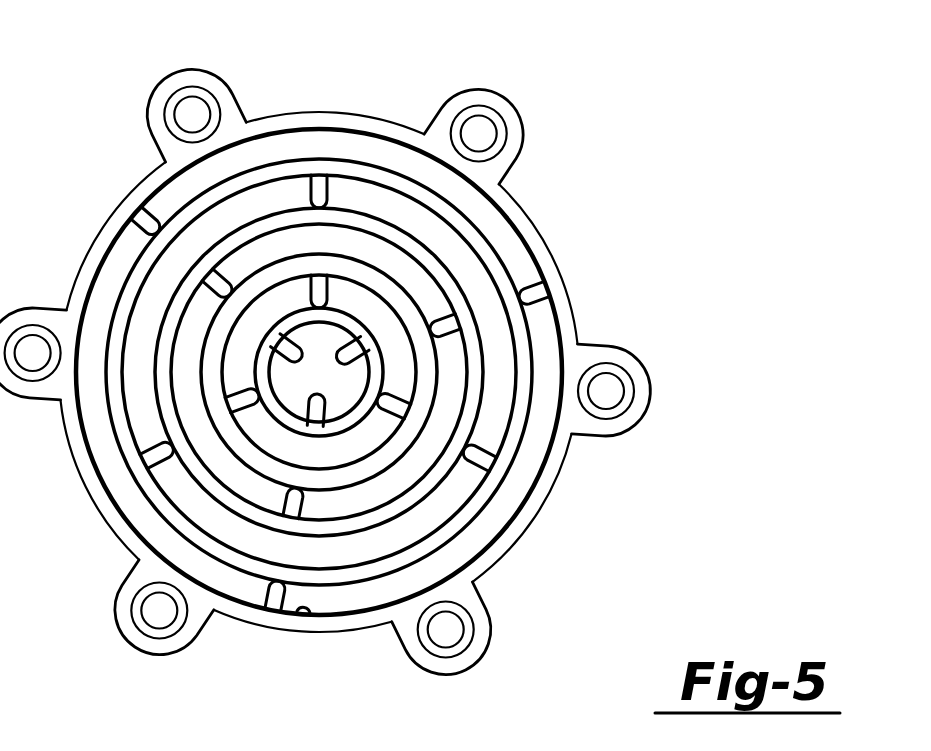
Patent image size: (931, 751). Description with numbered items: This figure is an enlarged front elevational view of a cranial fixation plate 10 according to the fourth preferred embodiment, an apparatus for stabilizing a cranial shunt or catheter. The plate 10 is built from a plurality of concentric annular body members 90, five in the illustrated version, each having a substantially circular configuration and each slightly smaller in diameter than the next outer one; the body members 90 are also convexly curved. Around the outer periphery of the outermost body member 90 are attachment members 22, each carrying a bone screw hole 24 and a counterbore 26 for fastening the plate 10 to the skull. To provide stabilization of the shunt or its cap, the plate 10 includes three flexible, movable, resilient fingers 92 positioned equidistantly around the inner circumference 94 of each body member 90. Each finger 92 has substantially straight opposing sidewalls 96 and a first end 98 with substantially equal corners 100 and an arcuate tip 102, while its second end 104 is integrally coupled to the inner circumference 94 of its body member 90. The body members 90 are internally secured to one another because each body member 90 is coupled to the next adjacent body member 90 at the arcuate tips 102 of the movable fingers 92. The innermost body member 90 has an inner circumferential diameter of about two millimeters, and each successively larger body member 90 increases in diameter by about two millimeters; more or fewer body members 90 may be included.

The cranial fixation plate 10 is at (606, 121).
The attachment member 22 is at (604, 434).
The bone screw hole 24 is at (608, 390).
The counterbore 26 is at (624, 396).
The annular body member 90 is at (365, 218).
The flexible movable resilient finger 92 is at (463, 338).
The inner circumference 94 is at (305, 614).
The opposing sidewall 96 is at (293, 407).
The first end 98 is at (318, 392).
The corner 100 is at (272, 592).
The arcuate tip 102 is at (290, 332).
The second end 104 is at (300, 512).